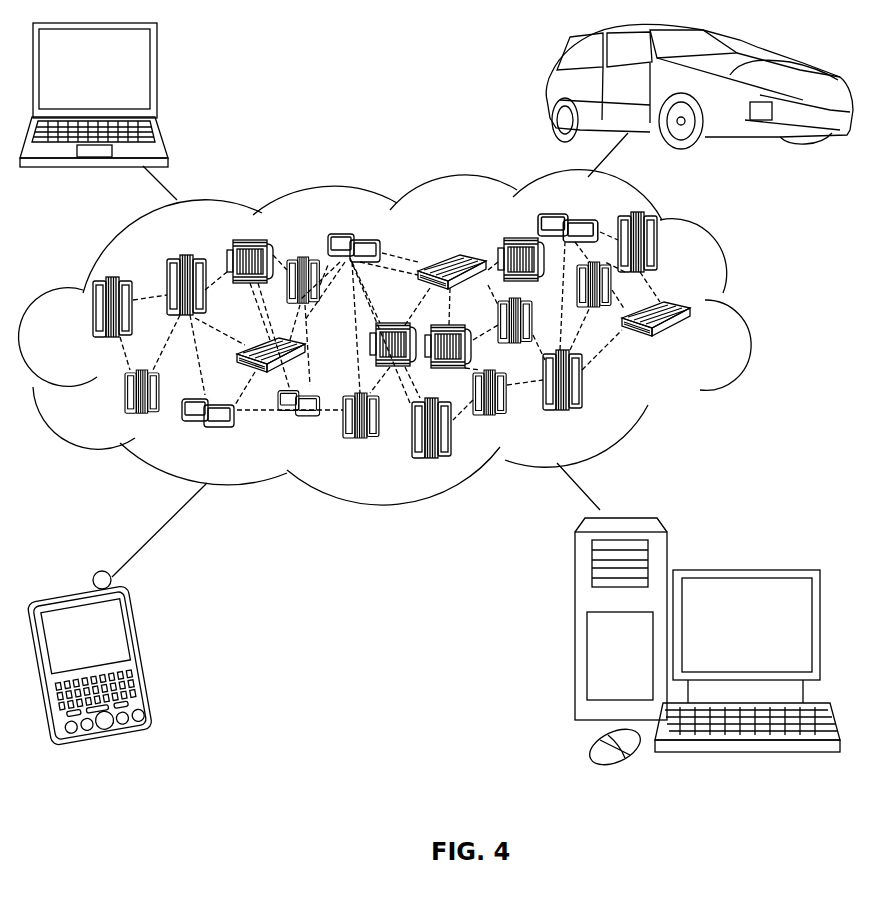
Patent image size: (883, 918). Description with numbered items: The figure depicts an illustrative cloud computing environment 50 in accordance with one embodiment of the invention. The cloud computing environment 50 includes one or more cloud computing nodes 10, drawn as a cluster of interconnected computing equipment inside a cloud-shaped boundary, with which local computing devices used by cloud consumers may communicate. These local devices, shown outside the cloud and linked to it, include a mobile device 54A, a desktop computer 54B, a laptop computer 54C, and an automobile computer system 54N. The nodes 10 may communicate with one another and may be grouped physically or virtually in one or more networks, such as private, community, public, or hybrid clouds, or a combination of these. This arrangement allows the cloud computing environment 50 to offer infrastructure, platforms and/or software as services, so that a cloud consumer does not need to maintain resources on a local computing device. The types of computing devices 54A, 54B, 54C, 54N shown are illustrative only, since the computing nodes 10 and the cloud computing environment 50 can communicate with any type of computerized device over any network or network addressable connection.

The cloud computing nodes 10 is at (692, 343).
The cloud computing environment 50 is at (745, 316).
The mobile device 54A is at (145, 650).
The desktop computer 54B is at (743, 568).
The laptop computer 54C is at (157, 78).
The automobile computer system 54N is at (548, 95).